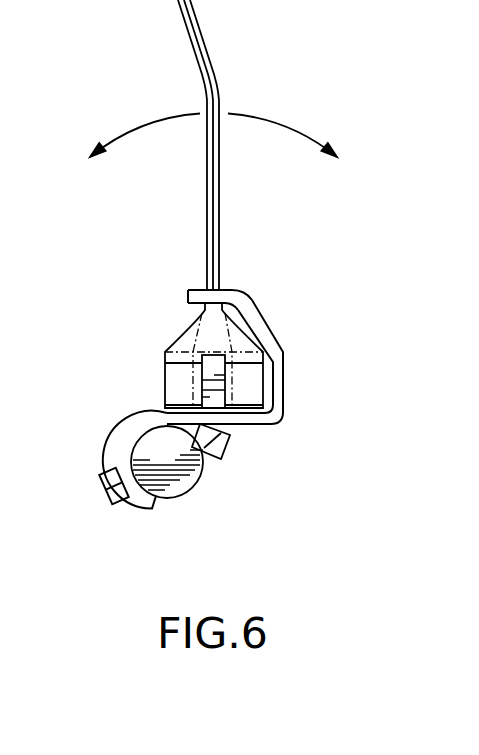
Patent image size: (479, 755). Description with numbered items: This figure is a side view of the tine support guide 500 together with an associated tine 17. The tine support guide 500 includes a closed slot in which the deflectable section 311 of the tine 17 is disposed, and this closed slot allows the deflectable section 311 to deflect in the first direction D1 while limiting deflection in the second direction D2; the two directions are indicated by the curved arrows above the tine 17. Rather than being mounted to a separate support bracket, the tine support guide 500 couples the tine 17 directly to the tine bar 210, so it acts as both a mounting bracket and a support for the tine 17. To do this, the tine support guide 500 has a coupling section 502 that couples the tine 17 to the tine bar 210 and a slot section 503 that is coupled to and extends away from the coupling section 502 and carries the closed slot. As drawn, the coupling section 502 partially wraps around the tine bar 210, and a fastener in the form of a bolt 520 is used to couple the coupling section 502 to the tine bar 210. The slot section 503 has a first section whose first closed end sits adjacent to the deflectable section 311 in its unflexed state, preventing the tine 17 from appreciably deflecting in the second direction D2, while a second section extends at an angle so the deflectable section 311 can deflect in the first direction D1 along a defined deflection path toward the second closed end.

The tine 17 is at (145, 327).
The deflectable section 311 is at (220, 267).
The tine support guide 500 is at (226, 399).
The coupling section 502 is at (130, 440).
The slot section 503 is at (283, 355).
The bolt 520 is at (215, 445).
The tine bar 210 is at (170, 477).
The first direction D1 is at (268, 118).
The second direction D2 is at (147, 125).